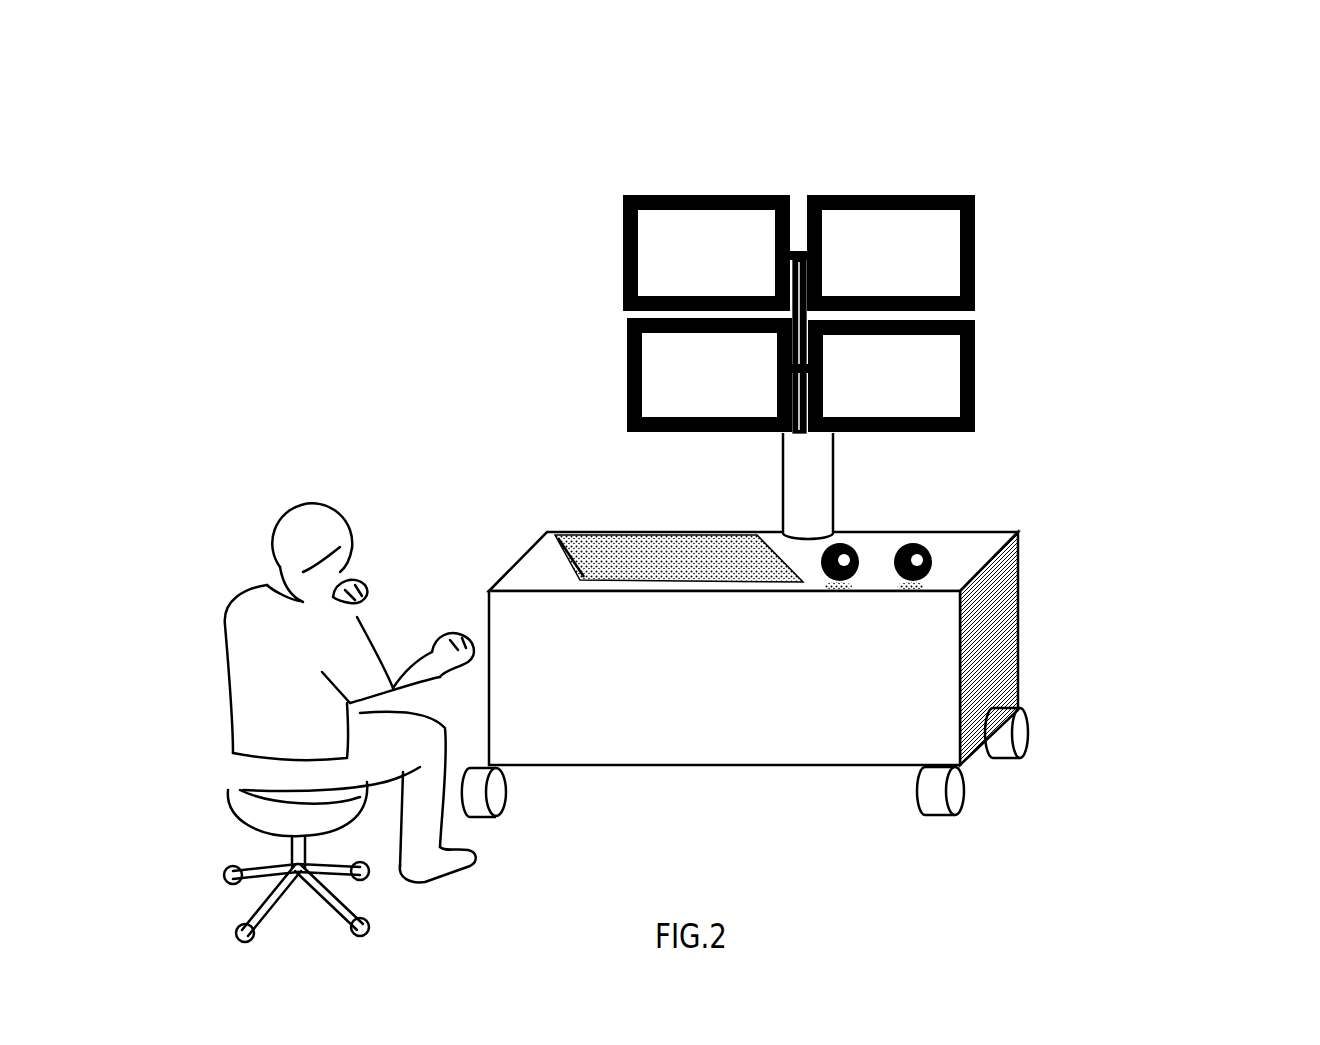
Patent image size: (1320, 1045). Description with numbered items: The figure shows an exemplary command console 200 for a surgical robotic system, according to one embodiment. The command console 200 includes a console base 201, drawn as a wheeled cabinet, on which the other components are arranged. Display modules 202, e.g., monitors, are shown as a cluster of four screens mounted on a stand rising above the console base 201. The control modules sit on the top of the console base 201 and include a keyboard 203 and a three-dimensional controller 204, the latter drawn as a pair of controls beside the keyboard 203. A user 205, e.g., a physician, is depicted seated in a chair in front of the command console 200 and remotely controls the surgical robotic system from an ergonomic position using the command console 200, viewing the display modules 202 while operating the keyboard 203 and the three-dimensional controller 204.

The command console 200 is at (460, 215).
The console base 201 is at (1000, 655).
The display modules 202 is at (927, 128).
The keyboard 203 is at (698, 531).
The 3D controller 204 is at (1137, 477).
The user 205 is at (265, 485).